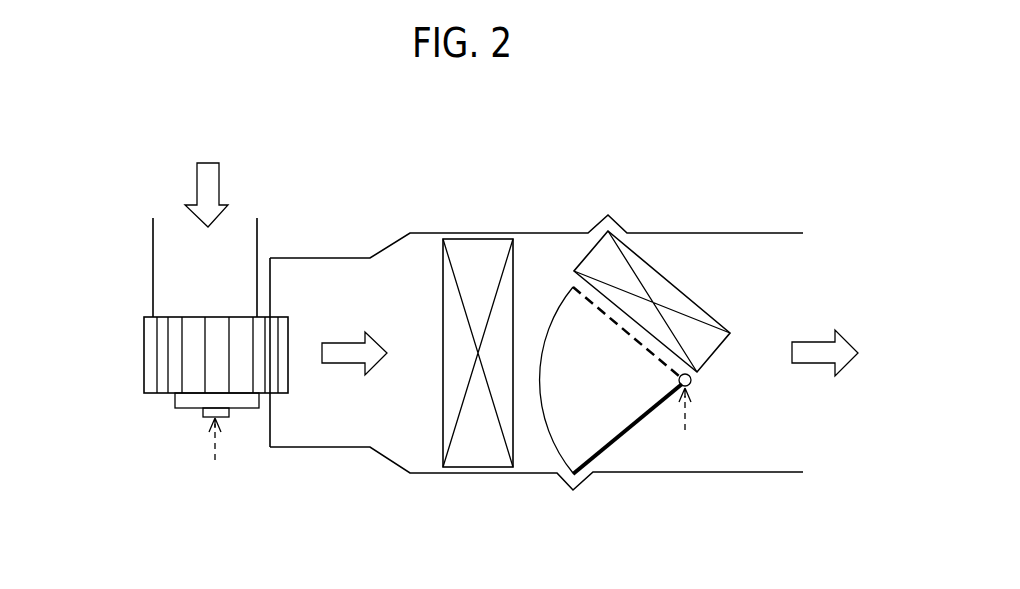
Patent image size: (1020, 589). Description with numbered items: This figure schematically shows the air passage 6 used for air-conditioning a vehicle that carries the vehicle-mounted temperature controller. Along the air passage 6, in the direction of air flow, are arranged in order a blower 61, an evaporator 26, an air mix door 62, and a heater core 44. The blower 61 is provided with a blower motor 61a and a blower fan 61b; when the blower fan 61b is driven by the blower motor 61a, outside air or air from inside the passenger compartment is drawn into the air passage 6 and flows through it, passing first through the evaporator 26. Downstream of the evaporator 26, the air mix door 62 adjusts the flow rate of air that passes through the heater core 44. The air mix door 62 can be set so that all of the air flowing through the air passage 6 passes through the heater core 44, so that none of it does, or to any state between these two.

The air passage 6 is at (222, 270).
The evaporator 26 is at (472, 237).
The heater core 44 is at (580, 253).
The blower 61 is at (181, 393).
The blower motor 61a is at (195, 403).
The blower fan 61b is at (153, 343).
The air mix door 62 is at (617, 442).